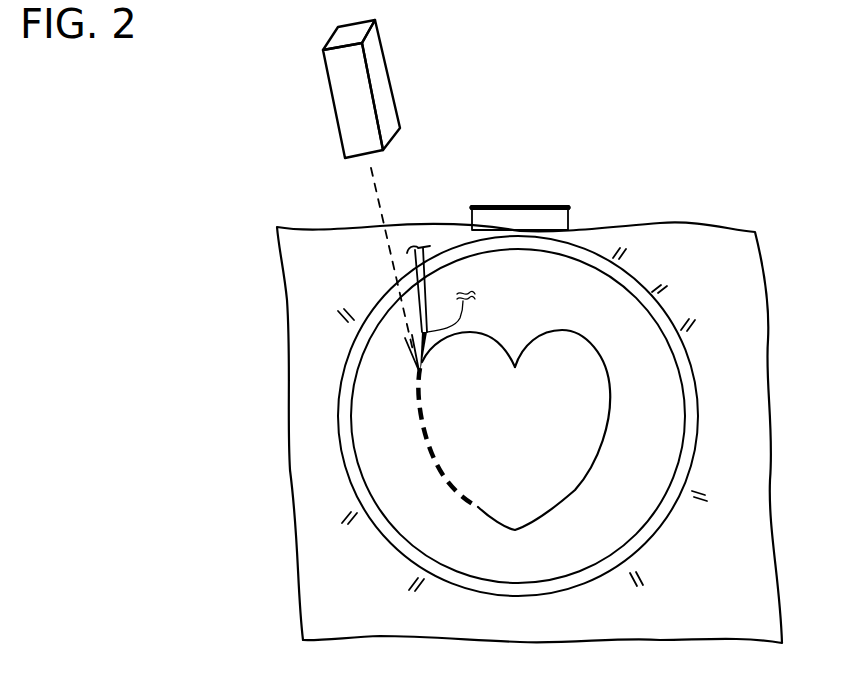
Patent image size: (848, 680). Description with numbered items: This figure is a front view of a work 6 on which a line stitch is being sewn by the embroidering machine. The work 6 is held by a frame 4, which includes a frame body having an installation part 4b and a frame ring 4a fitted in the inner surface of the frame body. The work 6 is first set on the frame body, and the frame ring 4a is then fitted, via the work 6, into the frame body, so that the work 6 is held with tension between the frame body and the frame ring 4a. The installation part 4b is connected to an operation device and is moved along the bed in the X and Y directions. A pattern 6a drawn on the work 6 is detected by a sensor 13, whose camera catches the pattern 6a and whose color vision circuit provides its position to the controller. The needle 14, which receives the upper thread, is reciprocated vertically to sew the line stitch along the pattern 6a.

The frame 4 is at (572, 201).
The frame ring 4a is at (463, 247).
The installation part 4b is at (521, 205).
The work 6 is at (575, 282).
The pattern 6a is at (597, 338).
The sensor 13 is at (345, 100).
The needle 14 is at (420, 293).